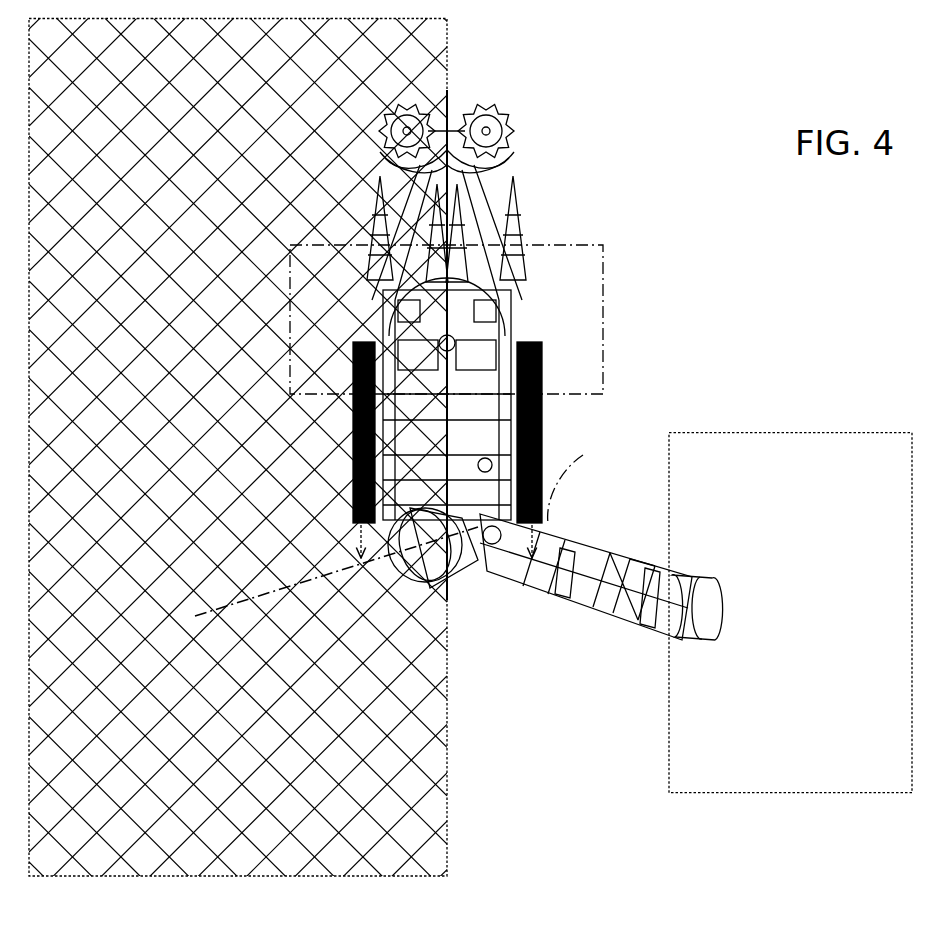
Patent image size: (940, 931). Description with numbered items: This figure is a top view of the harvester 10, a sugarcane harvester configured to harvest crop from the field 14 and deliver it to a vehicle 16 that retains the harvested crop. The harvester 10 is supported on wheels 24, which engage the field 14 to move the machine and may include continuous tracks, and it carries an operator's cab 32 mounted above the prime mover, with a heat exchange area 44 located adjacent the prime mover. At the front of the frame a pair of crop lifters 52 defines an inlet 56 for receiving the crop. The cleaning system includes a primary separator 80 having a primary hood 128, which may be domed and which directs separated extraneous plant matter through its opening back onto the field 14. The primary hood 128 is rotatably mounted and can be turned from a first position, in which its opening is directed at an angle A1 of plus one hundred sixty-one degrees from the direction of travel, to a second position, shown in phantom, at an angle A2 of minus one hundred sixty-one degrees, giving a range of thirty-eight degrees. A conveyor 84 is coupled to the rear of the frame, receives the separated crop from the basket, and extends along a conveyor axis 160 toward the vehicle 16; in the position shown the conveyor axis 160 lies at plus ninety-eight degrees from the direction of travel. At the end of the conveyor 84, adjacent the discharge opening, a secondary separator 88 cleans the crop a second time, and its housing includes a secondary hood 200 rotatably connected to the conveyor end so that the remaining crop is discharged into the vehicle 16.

The harvester 10 is at (471, 405).
The field 14 is at (700, 150).
The vehicle 16 is at (823, 470).
The wheels 24 is at (353, 480).
The operator's cab 32 is at (455, 330).
The heat exchange area 44 is at (603, 270).
The crop lifters 52 is at (540, 198).
The inlet 56 is at (490, 216).
The primary separator 80 is at (612, 598).
The conveyor 84 is at (597, 552).
The secondary separator 88 is at (668, 612).
The primary hood 128 is at (420, 603).
The conveyor axis 160 is at (592, 606).
The secondary hood 200 is at (700, 622).
The angle A1 is at (330, 545).
The angle A2 is at (584, 475).